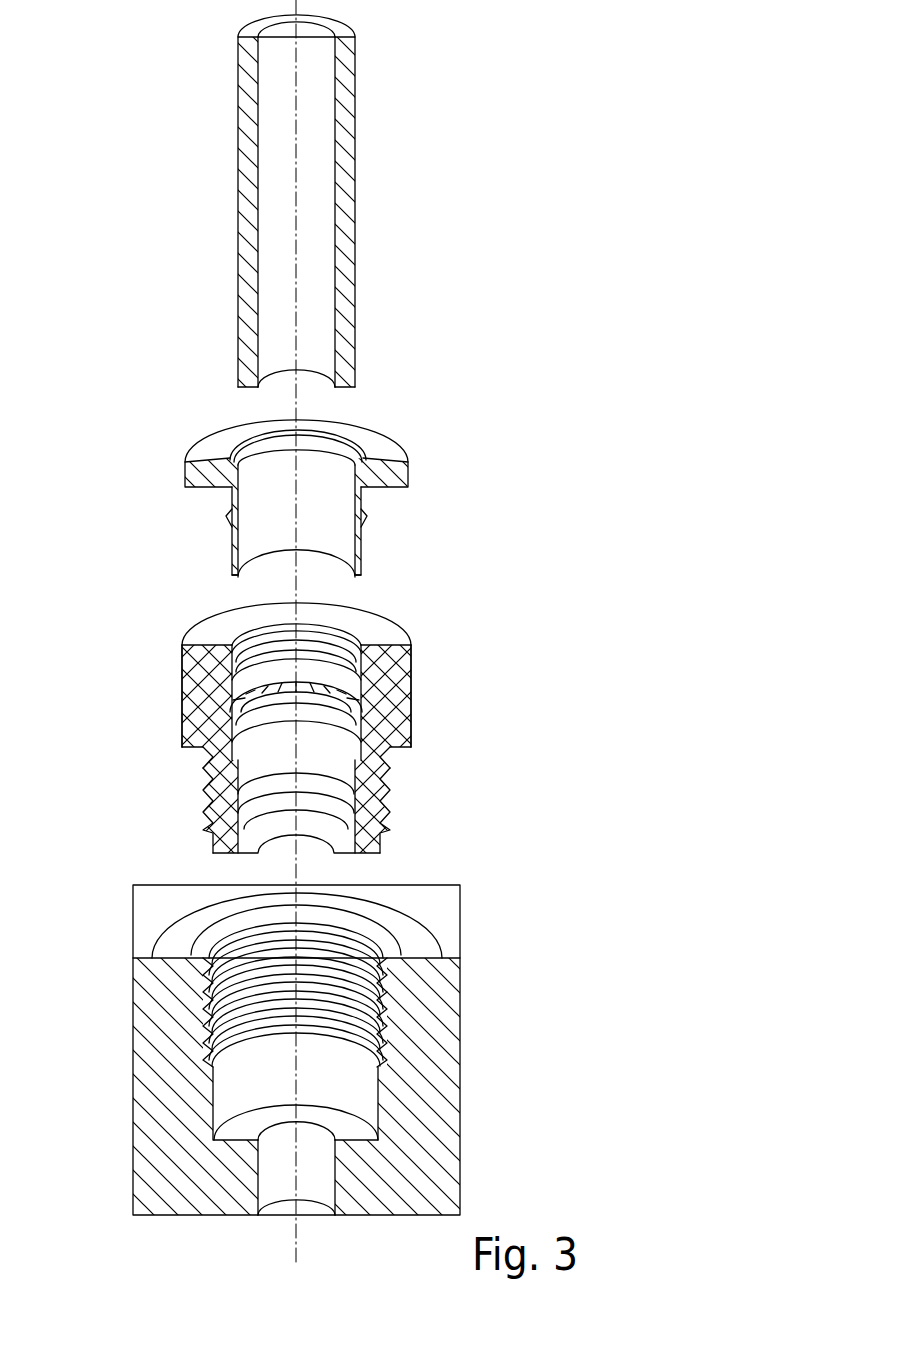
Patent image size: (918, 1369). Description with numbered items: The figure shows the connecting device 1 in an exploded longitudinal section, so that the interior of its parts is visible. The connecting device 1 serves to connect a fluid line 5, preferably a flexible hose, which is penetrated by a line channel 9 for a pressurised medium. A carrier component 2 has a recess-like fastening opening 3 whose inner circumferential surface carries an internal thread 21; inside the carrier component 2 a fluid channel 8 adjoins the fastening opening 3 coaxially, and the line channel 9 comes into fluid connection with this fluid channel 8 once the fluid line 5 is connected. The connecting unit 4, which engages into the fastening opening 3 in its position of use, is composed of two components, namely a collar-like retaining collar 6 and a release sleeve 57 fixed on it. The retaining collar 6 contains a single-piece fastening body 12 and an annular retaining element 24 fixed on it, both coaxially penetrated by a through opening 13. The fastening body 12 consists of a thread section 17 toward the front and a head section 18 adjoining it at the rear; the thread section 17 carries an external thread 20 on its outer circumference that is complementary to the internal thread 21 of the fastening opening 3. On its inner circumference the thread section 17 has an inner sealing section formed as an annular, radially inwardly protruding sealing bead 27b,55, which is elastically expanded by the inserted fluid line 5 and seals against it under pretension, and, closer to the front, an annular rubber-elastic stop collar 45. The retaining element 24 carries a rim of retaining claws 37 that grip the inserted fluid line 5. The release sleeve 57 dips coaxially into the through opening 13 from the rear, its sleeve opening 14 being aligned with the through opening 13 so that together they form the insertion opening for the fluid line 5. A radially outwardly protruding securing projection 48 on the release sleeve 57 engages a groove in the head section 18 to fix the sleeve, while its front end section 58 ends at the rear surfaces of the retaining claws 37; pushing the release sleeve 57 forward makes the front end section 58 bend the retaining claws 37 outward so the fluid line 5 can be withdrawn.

The connecting device 1 is at (455, 336).
The carrier component 2 is at (146, 1109).
The fastening opening 3 is at (355, 1077).
The connecting unit 4 is at (487, 407).
The fluid line 5 is at (345, 212).
The retaining collar 6 is at (416, 692).
The fluid channel 8 is at (312, 1155).
The line channel 9 is at (310, 150).
The fastening body 12 is at (186, 720).
The through opening 13 is at (335, 753).
The sleeve opening 14 is at (330, 497).
The thread section 17 is at (216, 805).
The head section 18 is at (190, 683).
The external thread 20 is at (392, 795).
The internal thread 21 is at (242, 964).
The retaining element 24 is at (262, 688).
The thread turn / groove 27b,55 is at (232, 776).
The retaining claws 37 is at (346, 683).
The stop collar 45 is at (340, 848).
The securing projection 48 is at (228, 519).
The release sleeve 57 is at (189, 447).
The front end section 58 is at (364, 571).